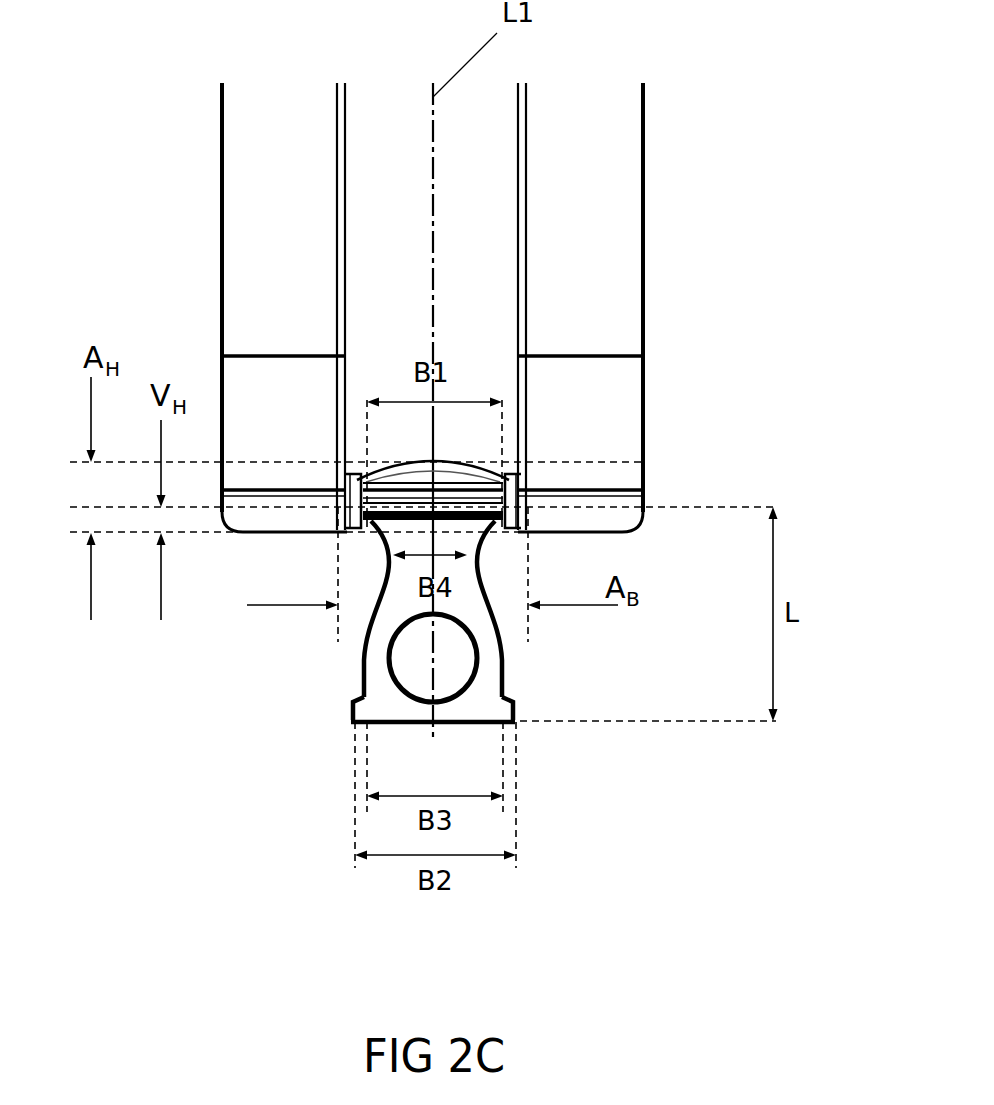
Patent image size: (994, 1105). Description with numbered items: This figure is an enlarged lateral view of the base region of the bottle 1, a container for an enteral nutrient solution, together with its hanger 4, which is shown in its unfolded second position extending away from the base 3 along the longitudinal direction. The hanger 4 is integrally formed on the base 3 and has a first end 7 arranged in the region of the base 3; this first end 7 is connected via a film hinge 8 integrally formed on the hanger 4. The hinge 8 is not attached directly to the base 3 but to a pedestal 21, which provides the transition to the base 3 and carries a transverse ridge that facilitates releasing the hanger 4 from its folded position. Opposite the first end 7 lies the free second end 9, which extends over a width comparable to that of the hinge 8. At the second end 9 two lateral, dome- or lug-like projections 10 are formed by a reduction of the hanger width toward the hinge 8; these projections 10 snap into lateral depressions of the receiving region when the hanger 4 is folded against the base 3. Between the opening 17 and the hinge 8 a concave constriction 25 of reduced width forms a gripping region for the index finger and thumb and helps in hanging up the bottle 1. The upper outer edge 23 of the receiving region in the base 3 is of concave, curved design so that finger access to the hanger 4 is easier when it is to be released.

The bottle 1 is at (676, 110).
The base 3 is at (656, 482).
The hanger 4 is at (380, 647).
The first end 7 is at (556, 416).
The hinge 8 is at (482, 510).
The second end 9 is at (467, 722).
The projections 10 is at (355, 715).
The opening 17 is at (452, 670).
The pedestal 21 is at (366, 545).
The upper outer edge 23 is at (447, 460).
The constriction 25 is at (490, 550).